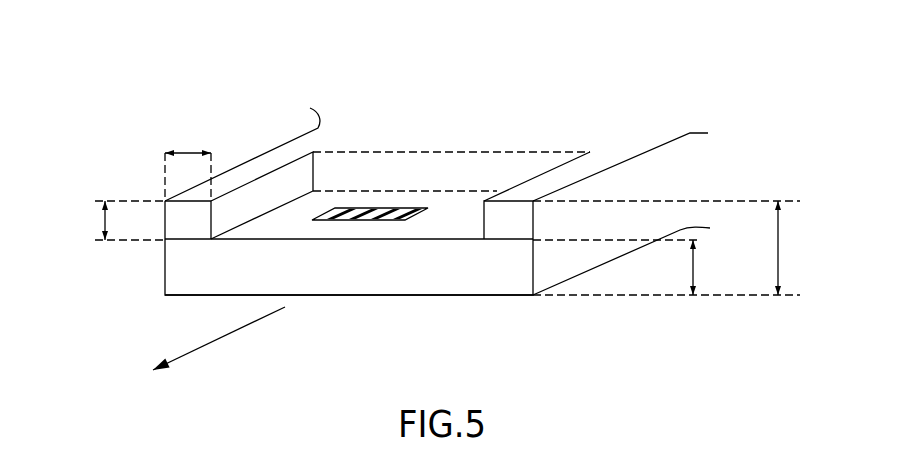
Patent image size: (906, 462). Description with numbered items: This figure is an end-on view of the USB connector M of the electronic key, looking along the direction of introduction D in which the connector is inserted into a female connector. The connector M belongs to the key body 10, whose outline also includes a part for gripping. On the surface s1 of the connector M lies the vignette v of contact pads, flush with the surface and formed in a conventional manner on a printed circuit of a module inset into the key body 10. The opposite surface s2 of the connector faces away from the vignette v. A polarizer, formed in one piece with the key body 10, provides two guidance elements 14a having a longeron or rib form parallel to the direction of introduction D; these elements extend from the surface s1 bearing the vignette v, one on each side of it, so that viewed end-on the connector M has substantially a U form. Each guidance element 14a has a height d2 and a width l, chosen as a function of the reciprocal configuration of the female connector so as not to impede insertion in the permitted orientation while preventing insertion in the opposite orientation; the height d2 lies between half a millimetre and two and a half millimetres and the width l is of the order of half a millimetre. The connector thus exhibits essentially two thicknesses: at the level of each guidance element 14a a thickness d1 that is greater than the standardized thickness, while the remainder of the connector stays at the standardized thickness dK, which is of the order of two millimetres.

The key body 10 is at (690, 133).
The guidance elements 14a is at (272, 162).
The surface s1 is at (455, 203).
The opposite surface s2 is at (465, 295).
The vignette v is at (368, 218).
The connector M is at (168, 285).
The direction of introduction D is at (219, 338).
The width l is at (188, 160).
The height d2 is at (111, 220).
The standardized thickness dK is at (636, 267).
The thickness d1 is at (678, 248).